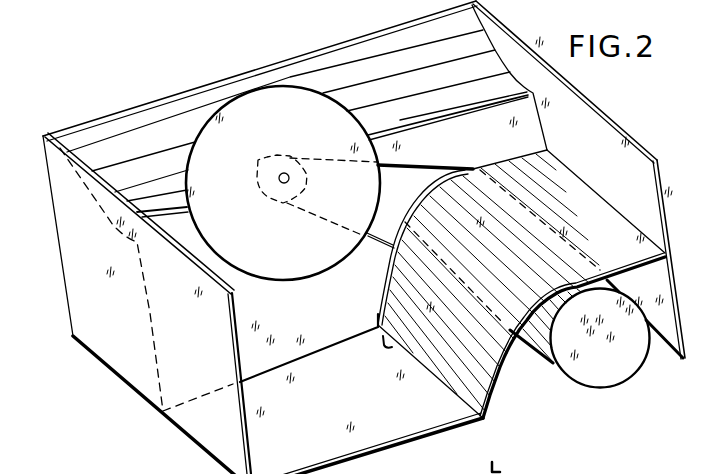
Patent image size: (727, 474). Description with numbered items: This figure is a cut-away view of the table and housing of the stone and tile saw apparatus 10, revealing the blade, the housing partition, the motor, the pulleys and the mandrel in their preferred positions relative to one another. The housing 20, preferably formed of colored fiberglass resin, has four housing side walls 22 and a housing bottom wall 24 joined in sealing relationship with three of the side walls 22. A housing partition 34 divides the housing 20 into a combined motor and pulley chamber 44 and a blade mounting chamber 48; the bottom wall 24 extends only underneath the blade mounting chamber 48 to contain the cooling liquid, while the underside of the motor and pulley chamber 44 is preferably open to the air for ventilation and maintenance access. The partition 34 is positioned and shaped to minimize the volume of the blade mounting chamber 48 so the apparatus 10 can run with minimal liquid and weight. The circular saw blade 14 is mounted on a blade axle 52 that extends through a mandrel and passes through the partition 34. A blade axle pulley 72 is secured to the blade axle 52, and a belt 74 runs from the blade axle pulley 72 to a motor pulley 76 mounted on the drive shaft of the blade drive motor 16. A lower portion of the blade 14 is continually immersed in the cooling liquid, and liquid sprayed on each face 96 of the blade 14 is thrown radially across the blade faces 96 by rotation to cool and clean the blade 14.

The stone and tile saw apparatus 10 is at (685, 473).
The saw blade 14 is at (368, 133).
The blade drive motor 16 is at (628, 360).
The housing 20 is at (160, 80).
The housing side walls 22 is at (629, 153).
The housing bottom wall 24 is at (388, 438).
The housing partition 34 is at (418, 30).
The motor and pulley chamber 44 is at (523, 393).
The blade mounting chamber 48 is at (533, 120).
The blade axle 52 is at (286, 173).
The blade axle pulley 72 is at (258, 157).
The belt 74 is at (433, 167).
The motor pulley 76 is at (418, 193).
The blade face 96 is at (347, 113).